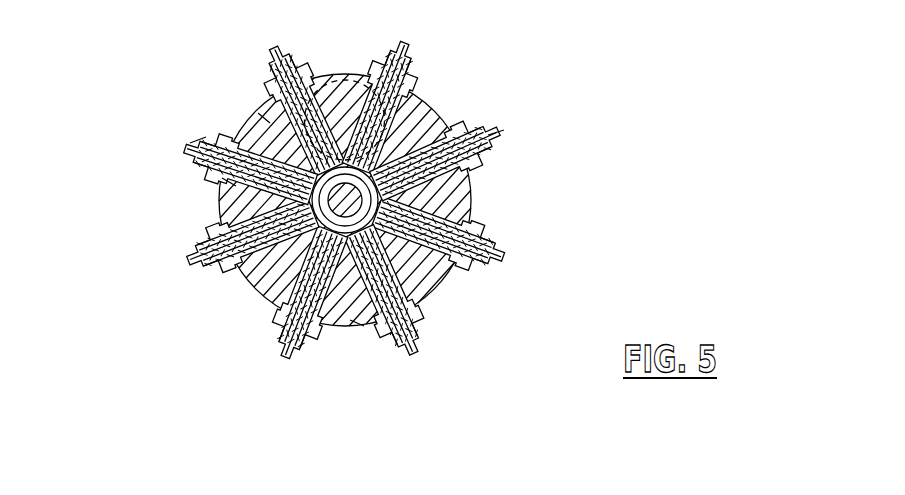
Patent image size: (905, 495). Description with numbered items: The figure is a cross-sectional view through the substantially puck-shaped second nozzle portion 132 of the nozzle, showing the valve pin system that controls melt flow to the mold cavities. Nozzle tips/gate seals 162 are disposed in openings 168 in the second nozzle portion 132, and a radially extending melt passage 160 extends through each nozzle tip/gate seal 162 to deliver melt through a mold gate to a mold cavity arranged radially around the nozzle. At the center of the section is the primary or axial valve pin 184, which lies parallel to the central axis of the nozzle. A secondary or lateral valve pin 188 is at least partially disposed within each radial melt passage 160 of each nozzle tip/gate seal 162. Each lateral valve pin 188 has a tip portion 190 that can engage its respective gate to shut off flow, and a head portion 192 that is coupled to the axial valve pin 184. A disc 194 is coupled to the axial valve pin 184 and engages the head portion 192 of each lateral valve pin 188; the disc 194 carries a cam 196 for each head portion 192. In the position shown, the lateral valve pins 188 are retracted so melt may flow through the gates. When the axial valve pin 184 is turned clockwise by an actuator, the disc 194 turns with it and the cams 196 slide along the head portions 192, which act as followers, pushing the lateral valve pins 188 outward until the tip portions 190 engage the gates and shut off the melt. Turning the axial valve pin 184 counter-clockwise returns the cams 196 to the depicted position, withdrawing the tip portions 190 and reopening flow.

The second nozzle portion 132 is at (455, 202).
The radially extending melt passage 160 is at (413, 325).
The nozzle tip/gate seal 162 is at (405, 140).
The opening 168 is at (405, 278).
The axial valve pin 184 is at (262, 292).
The lateral valve pin 188 is at (217, 138).
The tip portion 190 is at (192, 143).
The head portion 192 is at (263, 118).
The disc 194 is at (357, 323).
The cam 196 is at (230, 180).